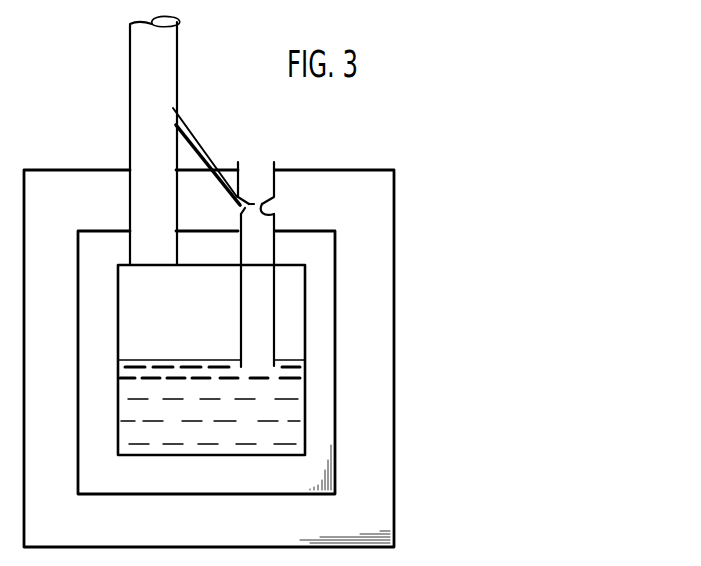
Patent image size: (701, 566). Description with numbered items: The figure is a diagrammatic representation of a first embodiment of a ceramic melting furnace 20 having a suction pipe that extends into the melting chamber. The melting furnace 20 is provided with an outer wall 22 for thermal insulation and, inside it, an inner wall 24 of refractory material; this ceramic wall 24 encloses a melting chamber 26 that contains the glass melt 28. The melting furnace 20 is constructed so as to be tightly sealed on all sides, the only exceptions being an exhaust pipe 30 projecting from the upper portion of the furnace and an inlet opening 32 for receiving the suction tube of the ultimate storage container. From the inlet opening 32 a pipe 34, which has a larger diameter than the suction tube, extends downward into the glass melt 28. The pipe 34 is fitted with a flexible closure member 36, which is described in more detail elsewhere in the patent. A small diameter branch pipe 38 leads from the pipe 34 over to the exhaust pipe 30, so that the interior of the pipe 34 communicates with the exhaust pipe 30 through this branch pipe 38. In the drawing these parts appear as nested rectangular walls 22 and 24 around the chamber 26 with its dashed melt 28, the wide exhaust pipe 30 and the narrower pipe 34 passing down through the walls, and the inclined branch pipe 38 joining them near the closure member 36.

The ceramic melting furnace 20 is at (408, 253).
The outer wall 22 is at (373, 518).
The inner wall 24 is at (323, 463).
The melting chamber 26 is at (293, 333).
The glass melt 28 is at (293, 408).
The exhaust pipe 30 is at (130, 112).
The inlet opening 32 is at (257, 171).
The pipe 34 is at (276, 292).
The flexible closure member 36 is at (277, 213).
The branch pipe 38 is at (198, 140).